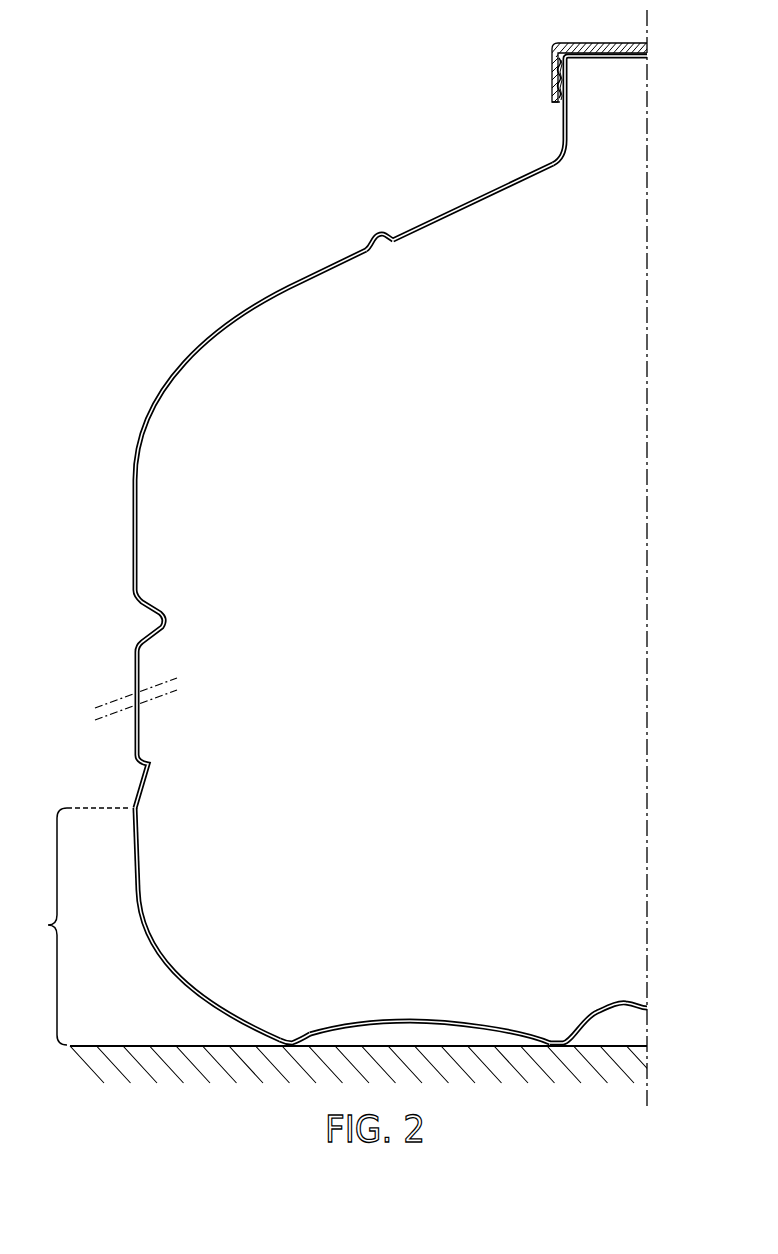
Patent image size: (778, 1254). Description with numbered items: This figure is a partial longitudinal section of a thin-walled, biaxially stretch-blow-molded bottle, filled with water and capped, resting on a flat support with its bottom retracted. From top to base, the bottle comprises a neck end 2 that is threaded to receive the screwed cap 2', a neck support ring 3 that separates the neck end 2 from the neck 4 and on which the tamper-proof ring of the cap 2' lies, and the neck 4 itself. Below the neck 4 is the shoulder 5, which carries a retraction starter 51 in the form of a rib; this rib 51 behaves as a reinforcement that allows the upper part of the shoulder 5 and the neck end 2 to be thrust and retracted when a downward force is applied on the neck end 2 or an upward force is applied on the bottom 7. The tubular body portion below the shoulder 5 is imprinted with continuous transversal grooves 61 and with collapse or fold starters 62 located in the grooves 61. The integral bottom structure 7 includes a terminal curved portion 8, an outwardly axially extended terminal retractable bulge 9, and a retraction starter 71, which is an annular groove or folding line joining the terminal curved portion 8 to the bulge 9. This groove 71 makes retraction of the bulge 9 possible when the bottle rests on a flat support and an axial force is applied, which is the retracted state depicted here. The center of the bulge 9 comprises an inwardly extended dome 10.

The screwed cap 2' is at (577, 71).
The neck end 2 is at (586, 81).
The neck support ring 3 is at (553, 103).
The neck 4 is at (568, 142).
The shoulder 5 is at (367, 273).
The retraction starter rib 51 is at (375, 238).
The continuous transversal grooves 61 is at (145, 618).
The collapse/fold starters 62 is at (140, 783).
The integral bottom structure 7 is at (156, 926).
The retraction starter groove 71 is at (293, 1040).
The terminal curved portion 8 is at (148, 943).
The terminal retractable bulge 9 is at (412, 1020).
The inwardly extended dome 10 is at (598, 1015).